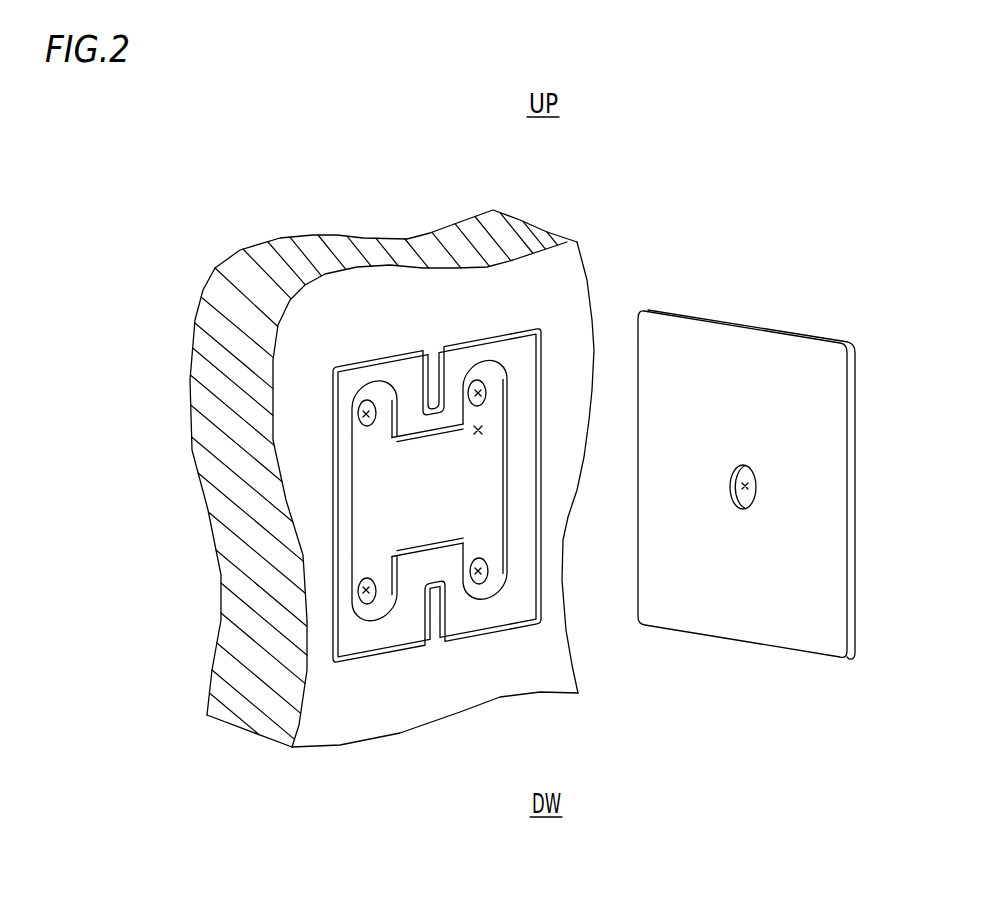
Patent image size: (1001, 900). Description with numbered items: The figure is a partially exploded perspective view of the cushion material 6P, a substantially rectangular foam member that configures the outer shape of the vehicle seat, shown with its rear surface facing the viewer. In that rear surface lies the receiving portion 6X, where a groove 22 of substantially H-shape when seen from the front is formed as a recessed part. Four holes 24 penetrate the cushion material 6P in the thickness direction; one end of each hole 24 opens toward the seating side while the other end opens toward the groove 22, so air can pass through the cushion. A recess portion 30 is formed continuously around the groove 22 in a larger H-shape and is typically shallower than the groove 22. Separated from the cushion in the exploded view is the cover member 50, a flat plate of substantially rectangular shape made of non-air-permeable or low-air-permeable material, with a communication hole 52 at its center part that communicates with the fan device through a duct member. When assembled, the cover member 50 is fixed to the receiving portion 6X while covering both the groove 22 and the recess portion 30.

The cushion material 6P is at (565, 267).
The receiving portion 6X is at (553, 675).
The recess portion 30 is at (463, 343).
The holes 24 is at (362, 414).
The groove 22 is at (481, 428).
The cover member 50 is at (793, 353).
The communication hole 52 is at (753, 484).